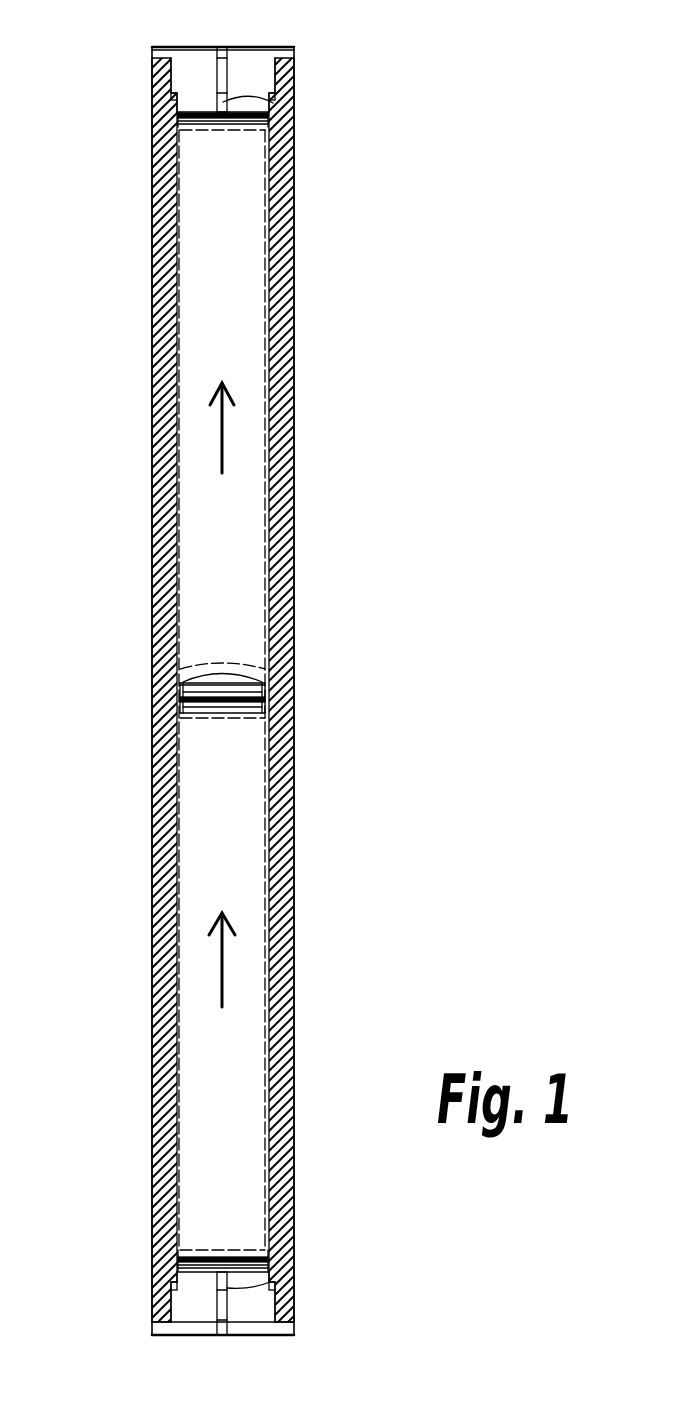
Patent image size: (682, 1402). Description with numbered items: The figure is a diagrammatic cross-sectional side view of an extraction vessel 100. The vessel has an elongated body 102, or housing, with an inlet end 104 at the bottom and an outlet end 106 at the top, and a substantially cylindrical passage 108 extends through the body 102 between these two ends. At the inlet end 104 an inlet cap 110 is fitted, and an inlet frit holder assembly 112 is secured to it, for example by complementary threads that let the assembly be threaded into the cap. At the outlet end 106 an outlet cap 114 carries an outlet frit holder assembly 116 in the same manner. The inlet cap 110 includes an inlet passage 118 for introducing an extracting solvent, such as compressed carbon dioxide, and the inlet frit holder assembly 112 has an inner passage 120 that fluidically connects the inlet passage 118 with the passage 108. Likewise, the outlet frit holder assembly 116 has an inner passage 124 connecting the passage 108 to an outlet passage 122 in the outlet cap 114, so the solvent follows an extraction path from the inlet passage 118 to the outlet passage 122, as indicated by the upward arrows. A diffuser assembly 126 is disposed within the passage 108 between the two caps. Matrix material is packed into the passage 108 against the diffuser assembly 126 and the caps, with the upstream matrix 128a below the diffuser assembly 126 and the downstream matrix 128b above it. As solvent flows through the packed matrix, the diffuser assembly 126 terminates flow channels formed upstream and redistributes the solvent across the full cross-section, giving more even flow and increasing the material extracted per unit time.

The extraction vessel 100 is at (412, 71).
The elongated body 102 is at (265, 691).
The inlet end 104 is at (225, 1320).
The outlet end 106 is at (226, 59).
The passage 108 is at (275, 875).
The inlet cap 110 is at (170, 1333).
The inlet frit holder assembly 112 is at (267, 1263).
The outlet cap 114 is at (170, 47).
The outlet frit holder assembly 116 is at (177, 112).
The inlet passage 118 is at (227, 1310).
The inner passage 120 is at (270, 1282).
The outlet passage 122 is at (227, 74).
The inner passage 124 is at (273, 103).
The diffuser assembly 126 is at (265, 695).
The upstream matrix 128a is at (265, 973).
The downstream matrix 128b is at (265, 395).